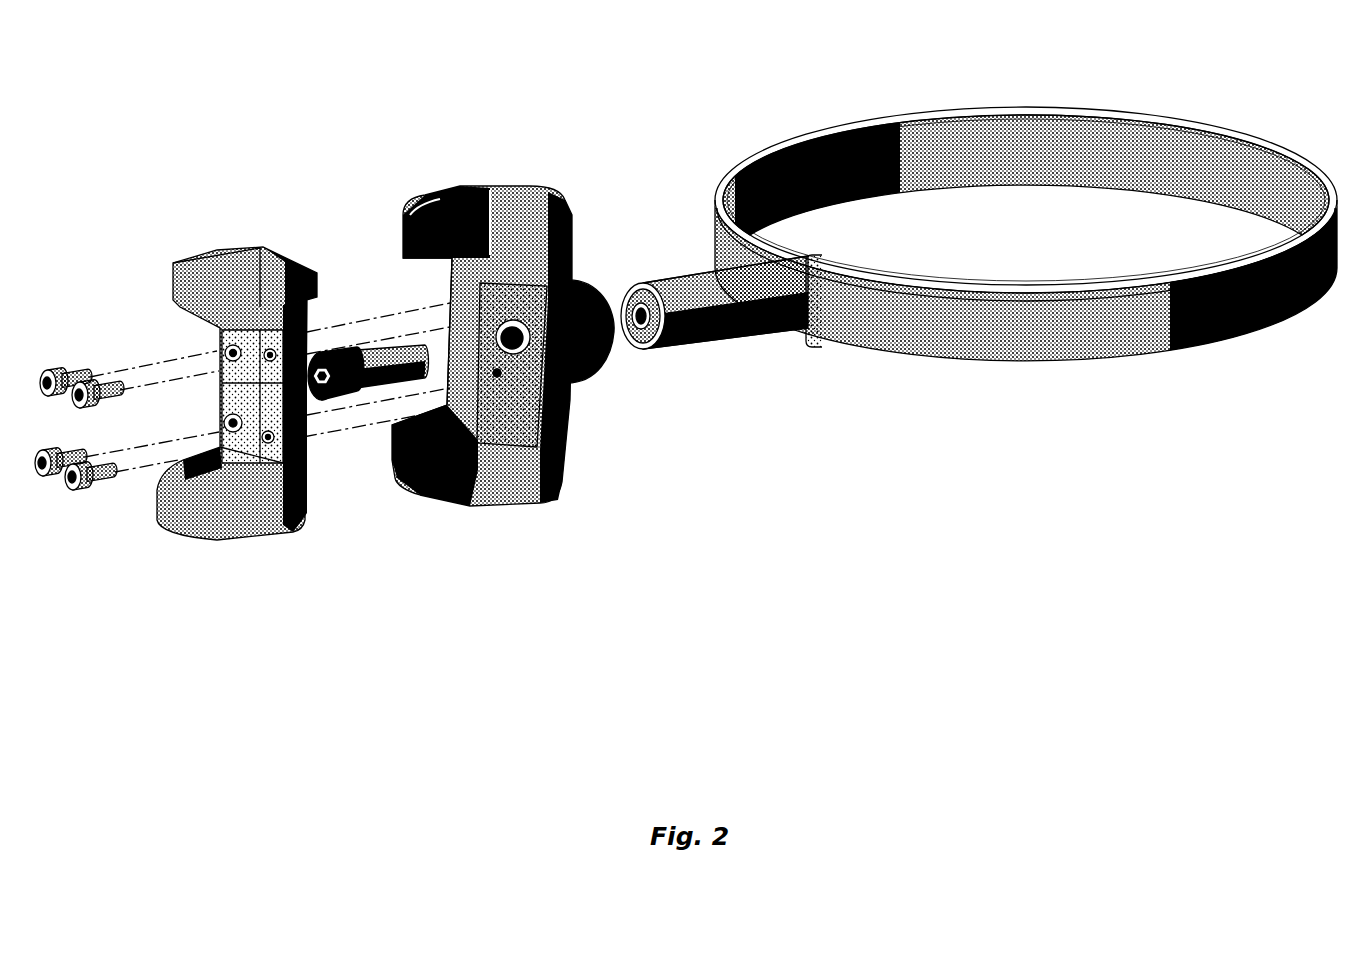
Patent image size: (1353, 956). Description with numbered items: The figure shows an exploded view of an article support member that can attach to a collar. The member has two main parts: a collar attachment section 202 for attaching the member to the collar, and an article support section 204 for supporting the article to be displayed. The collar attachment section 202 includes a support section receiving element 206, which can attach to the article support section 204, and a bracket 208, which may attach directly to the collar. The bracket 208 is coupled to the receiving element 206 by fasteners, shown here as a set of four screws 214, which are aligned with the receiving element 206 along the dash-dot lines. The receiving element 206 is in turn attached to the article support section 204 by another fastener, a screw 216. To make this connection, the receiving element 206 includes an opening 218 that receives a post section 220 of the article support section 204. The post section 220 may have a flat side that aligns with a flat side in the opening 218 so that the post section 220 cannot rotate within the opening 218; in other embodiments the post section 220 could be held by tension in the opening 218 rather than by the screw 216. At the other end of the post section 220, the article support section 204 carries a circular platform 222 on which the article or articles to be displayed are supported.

The collar attachment section 202 is at (302, 175).
The article support section 204 is at (990, 93).
The support section receiving element 206 is at (530, 493).
The bracket 208 is at (280, 532).
The screws 214 is at (101, 499).
The screw 216 is at (388, 380).
The opening 218 is at (619, 357).
The post section 220 is at (657, 265).
The circular platform 222 is at (1160, 120).